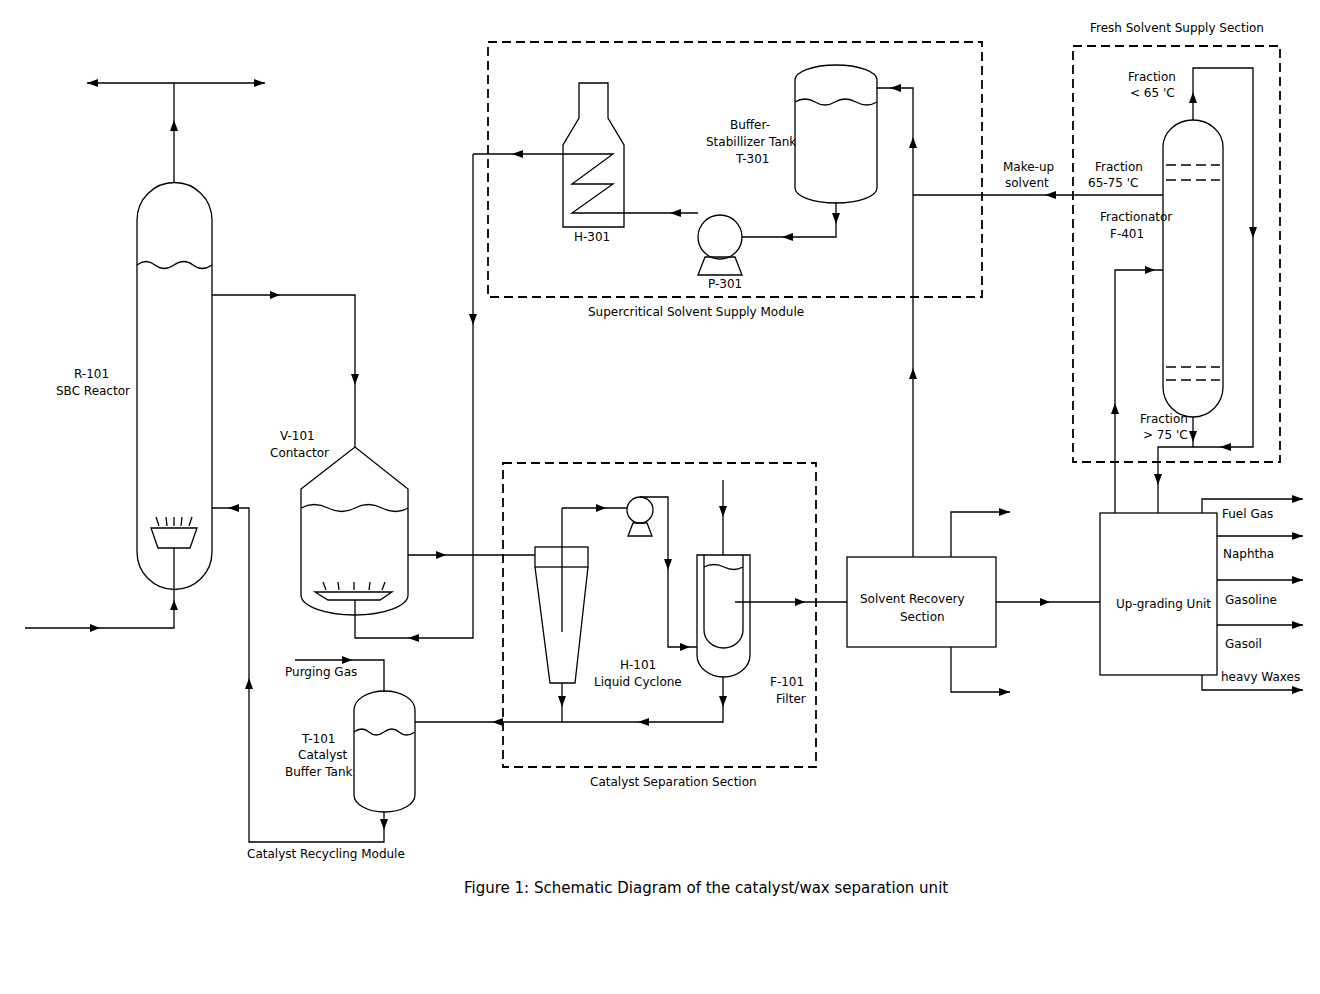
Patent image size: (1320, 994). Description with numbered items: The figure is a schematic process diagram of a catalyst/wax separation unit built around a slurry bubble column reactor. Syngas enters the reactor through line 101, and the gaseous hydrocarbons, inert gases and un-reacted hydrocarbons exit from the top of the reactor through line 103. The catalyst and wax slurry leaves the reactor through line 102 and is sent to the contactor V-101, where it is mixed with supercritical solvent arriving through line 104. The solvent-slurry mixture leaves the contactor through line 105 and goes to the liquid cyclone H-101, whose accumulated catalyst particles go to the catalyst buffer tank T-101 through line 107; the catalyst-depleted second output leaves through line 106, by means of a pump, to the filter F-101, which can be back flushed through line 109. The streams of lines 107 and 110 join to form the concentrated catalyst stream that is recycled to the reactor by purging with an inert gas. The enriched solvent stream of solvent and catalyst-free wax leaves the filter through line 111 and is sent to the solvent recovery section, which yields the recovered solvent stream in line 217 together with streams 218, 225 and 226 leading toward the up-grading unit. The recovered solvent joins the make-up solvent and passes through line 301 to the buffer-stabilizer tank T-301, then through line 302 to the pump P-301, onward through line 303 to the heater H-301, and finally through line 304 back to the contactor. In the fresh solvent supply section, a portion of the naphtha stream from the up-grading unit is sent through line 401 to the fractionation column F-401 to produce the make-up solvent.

The line 101 is at (101, 597).
The line 102 is at (285, 369).
The line 103 is at (165, 131).
The supercritical solvent stream 104 is at (431, 398).
The line 105 is at (471, 546).
The line 106 is at (629, 567).
The line 107 is at (547, 702).
The line 109 is at (740, 517).
The line 110 is at (588, 703).
The line 111 is at (791, 591).
The line 217 is at (946, 376).
The product stream to up-grading unit 218 is at (1048, 591).
The solvent recovery bottom stream 225 is at (983, 671).
The solvent recovery top stream 226 is at (980, 521).
The line 301 is at (917, 138).
The line 302 is at (791, 232).
The pump discharge stream 303 is at (661, 219).
The line 304 is at (518, 163).
The line 401 is at (1137, 380).